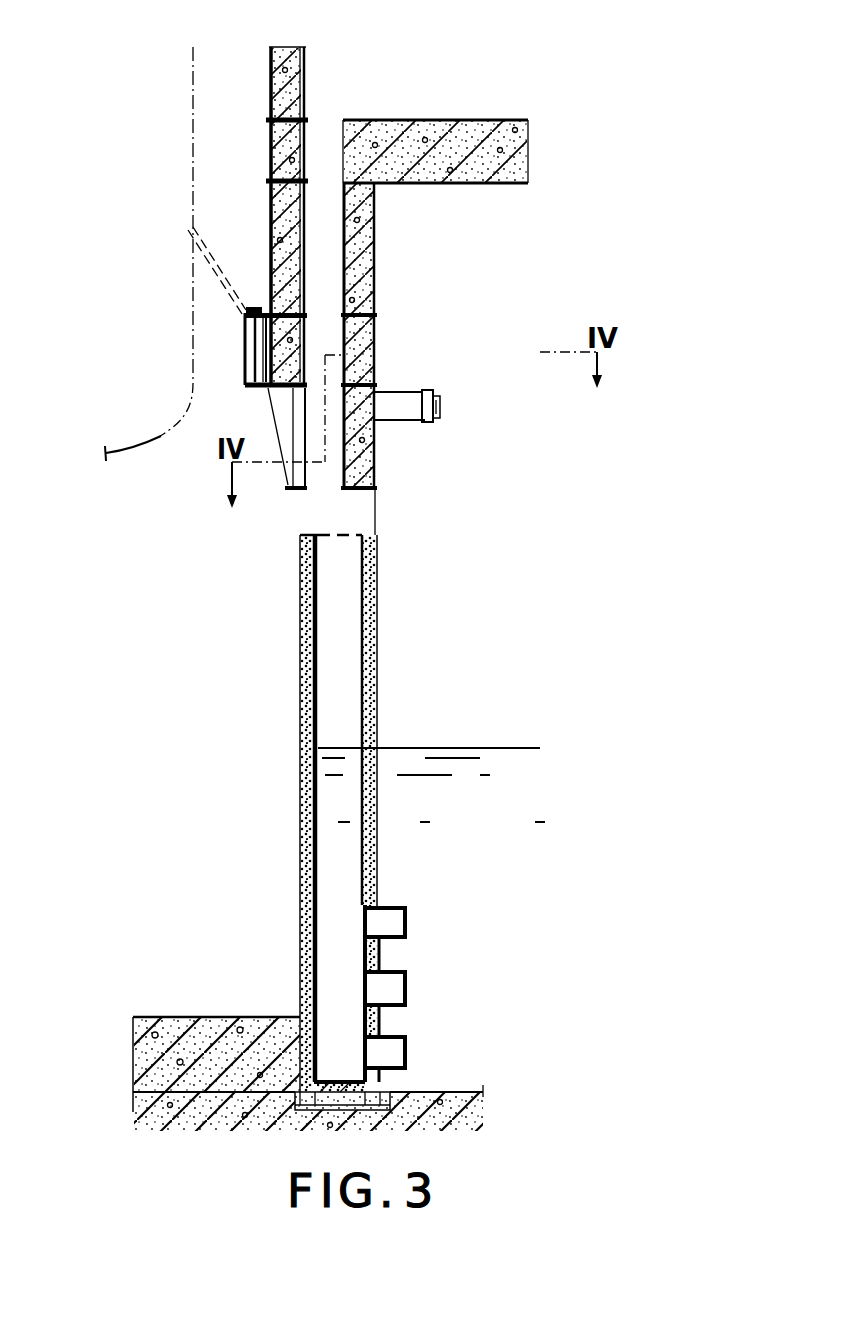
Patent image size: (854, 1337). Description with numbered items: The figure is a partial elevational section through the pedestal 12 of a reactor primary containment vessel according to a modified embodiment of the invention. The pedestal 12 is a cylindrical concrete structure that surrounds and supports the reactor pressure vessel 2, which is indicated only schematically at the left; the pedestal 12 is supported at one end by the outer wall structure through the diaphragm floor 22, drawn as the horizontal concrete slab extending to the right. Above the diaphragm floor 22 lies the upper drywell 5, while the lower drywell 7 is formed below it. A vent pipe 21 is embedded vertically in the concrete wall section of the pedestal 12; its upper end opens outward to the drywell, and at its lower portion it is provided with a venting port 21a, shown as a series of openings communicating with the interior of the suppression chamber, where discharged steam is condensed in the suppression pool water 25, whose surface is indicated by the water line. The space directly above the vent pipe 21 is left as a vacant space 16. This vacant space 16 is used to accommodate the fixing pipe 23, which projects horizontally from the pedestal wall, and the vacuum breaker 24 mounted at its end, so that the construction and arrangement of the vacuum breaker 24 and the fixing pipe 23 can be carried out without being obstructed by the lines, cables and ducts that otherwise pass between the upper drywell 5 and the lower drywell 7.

The reactor pressure vessel 2 is at (160, 438).
The upper drywell 5 is at (421, 78).
The lower drywell 7 is at (213, 682).
The pedestal 12 is at (377, 587).
The vacant space 16 is at (330, 348).
The vent pipe 21 is at (363, 668).
The venting port 21a is at (405, 937).
The diaphragm floor 22 is at (497, 120).
The fixing pipe 23 is at (402, 403).
The vacuum breaker 24 is at (443, 393).
The suppression pool water 25 is at (507, 825).